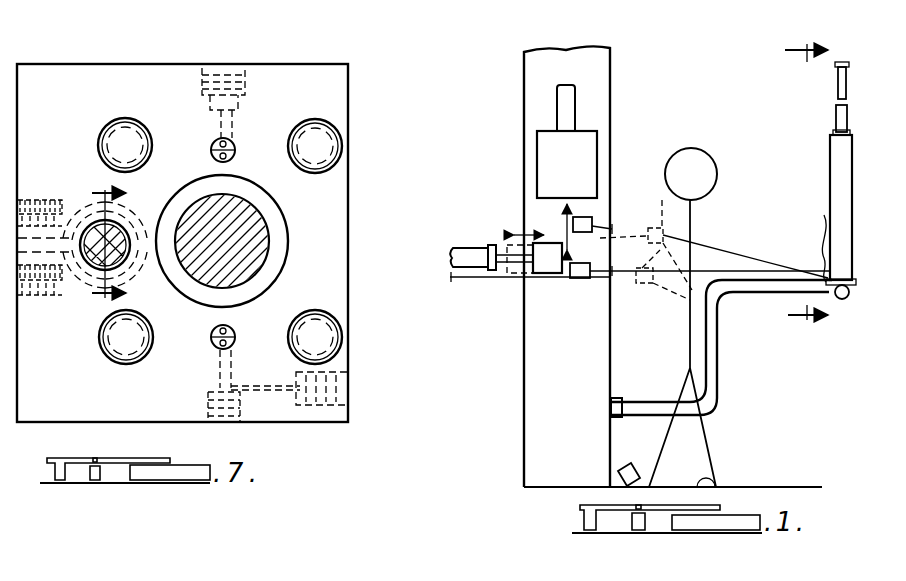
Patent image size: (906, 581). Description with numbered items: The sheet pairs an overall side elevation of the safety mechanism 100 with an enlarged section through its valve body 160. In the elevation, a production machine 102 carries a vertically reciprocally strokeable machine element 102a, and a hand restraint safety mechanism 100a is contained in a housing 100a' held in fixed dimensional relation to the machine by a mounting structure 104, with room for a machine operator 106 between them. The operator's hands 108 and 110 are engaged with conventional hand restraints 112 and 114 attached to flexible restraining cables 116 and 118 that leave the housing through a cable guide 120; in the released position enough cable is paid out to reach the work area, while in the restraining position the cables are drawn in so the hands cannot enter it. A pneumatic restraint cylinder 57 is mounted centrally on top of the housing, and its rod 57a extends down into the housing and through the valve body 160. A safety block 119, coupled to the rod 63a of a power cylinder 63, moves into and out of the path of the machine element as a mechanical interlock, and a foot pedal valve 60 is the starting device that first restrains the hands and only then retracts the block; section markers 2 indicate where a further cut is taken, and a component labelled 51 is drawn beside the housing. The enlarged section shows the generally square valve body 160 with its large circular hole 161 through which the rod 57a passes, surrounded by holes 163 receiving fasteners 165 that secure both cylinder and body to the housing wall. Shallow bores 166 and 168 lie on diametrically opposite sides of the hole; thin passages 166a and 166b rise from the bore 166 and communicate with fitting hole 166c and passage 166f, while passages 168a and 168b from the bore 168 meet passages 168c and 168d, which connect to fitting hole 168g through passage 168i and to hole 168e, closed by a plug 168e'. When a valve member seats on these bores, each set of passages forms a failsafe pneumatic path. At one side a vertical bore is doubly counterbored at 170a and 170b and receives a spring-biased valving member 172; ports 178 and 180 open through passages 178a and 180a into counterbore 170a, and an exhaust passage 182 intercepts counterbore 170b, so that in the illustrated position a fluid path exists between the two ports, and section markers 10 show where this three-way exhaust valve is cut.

In FIG. 7, the valve body 160 is at (348, 64).
In FIG. 7, the large circular hole 161 is at (284, 247).
In FIG. 7, the rod 57a is at (263, 226).
In FIG. 7, the counterbore 170a is at (227, 224).
In FIG. 7, the counterbore 170b is at (224, 246).
In FIG. 7, the valving member 172 is at (103, 241).
In FIG. 7, the fasteners 165 is at (123, 140).
In FIG. 7, the holes 163 is at (102, 131).
In FIG. 7, the shallow bore 166 is at (234, 148).
In FIG. 7, the passage 166a is at (238, 130).
In FIG. 7, the passage 166b is at (234, 158).
In FIG. 7, the hole 166c is at (205, 128).
In FIG. 7, the passage 166f is at (212, 156).
In FIG. 7, the shallow bore 168 is at (235, 331).
In FIG. 7, the passage 168a is at (233, 345).
In FIG. 7, the passage 168b is at (212, 330).
In FIG. 7, the passage 168c is at (214, 372).
In FIG. 7, the passage 168d is at (213, 348).
In FIG. 7, the hole 168e is at (184, 407).
In FIG. 7, the plug 168e' is at (174, 438).
In FIG. 7, the hole 168g is at (350, 387).
In FIG. 7, the passage 168i is at (264, 386).
In FIG. 7, the port 178 is at (48, 230).
In FIG. 7, the passage 178a is at (75, 215).
In FIG. 7, the port 180 is at (32, 300).
In FIG. 7, the passage 180a is at (66, 300).
In FIG. 7, the exhaust passage 182 is at (86, 200).
In FIG. 7, the section line 10- 10 is at (122, 241).
In FIG. 1, the production machine 102 is at (616, 60).
In FIG. 1, the machine element 102a is at (597, 143).
In FIG. 1, the hand restraint 114 is at (567, 141).
In FIG. 1, the hand 110 is at (654, 226).
In FIG. 1, the hand restraint 112 is at (590, 264).
In FIG. 1, the hand 108 is at (596, 279).
In FIG. 1, the machine operator 106 is at (693, 148).
In FIG. 1, the flexible restraining cable 116 is at (712, 272).
In FIG. 1, the flexible restraining cable 118 is at (714, 236).
In FIG. 1, the power cylinder 63 is at (467, 246).
In FIG. 1, the rod 63a is at (527, 316).
In FIG. 1, the safety block 119 is at (552, 274).
In FIG. 1, the mounting structure 104 is at (763, 295).
In FIG. 1, the safety mechanism 100 is at (828, 156).
In FIG. 1, the hand restraint safety mechanism 100a is at (800, 177).
In FIG. 1, the housing 100a' is at (797, 102).
In FIG. 1, the restraint cylinder 57 is at (838, 82).
In FIG. 1, the cable 51 is at (823, 232).
In FIG. 1, the cable guide 120 is at (832, 298).
In FIG. 1, the section line 2- 2 is at (806, 187).
In FIG. 1, the foot pedal valve 60 is at (631, 466).